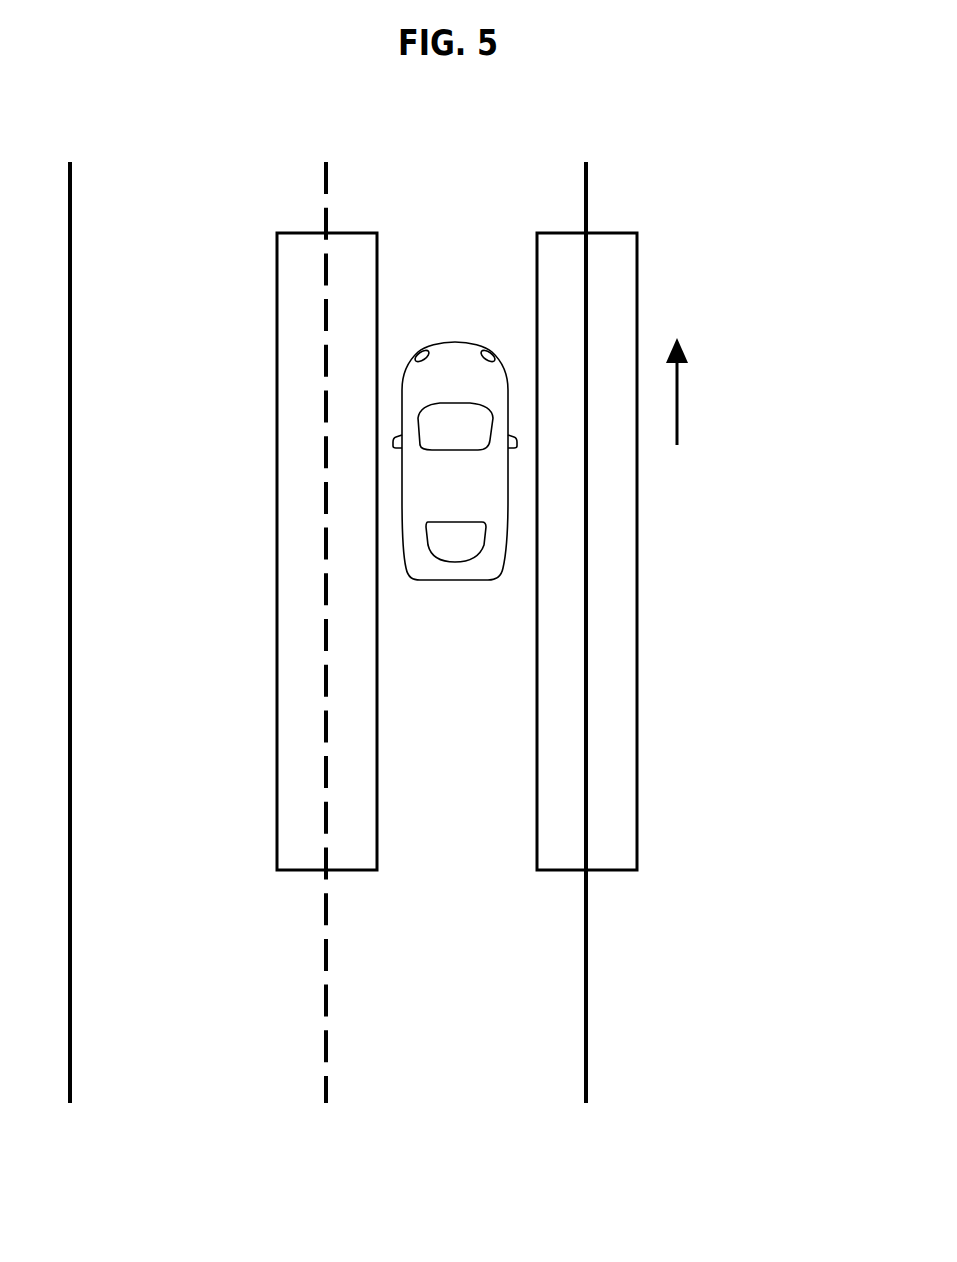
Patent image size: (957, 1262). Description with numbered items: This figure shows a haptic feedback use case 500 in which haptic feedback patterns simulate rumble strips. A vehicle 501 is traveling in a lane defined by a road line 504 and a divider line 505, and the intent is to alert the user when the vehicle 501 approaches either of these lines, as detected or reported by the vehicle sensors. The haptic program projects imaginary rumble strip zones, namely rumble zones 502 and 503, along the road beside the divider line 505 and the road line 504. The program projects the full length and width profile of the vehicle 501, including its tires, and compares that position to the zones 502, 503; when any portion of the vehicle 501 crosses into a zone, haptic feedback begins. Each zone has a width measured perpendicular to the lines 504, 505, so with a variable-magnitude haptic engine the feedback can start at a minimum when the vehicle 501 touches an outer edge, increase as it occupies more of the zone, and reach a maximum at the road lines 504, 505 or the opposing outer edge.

The driving scenario / roadway environment 500 is at (769, 134).
The vehicle 501 is at (457, 342).
The rumble zone 502 is at (257, 748).
The rumble zone 503 is at (631, 889).
The road line 504 is at (587, 597).
The divider line 505 is at (323, 600).